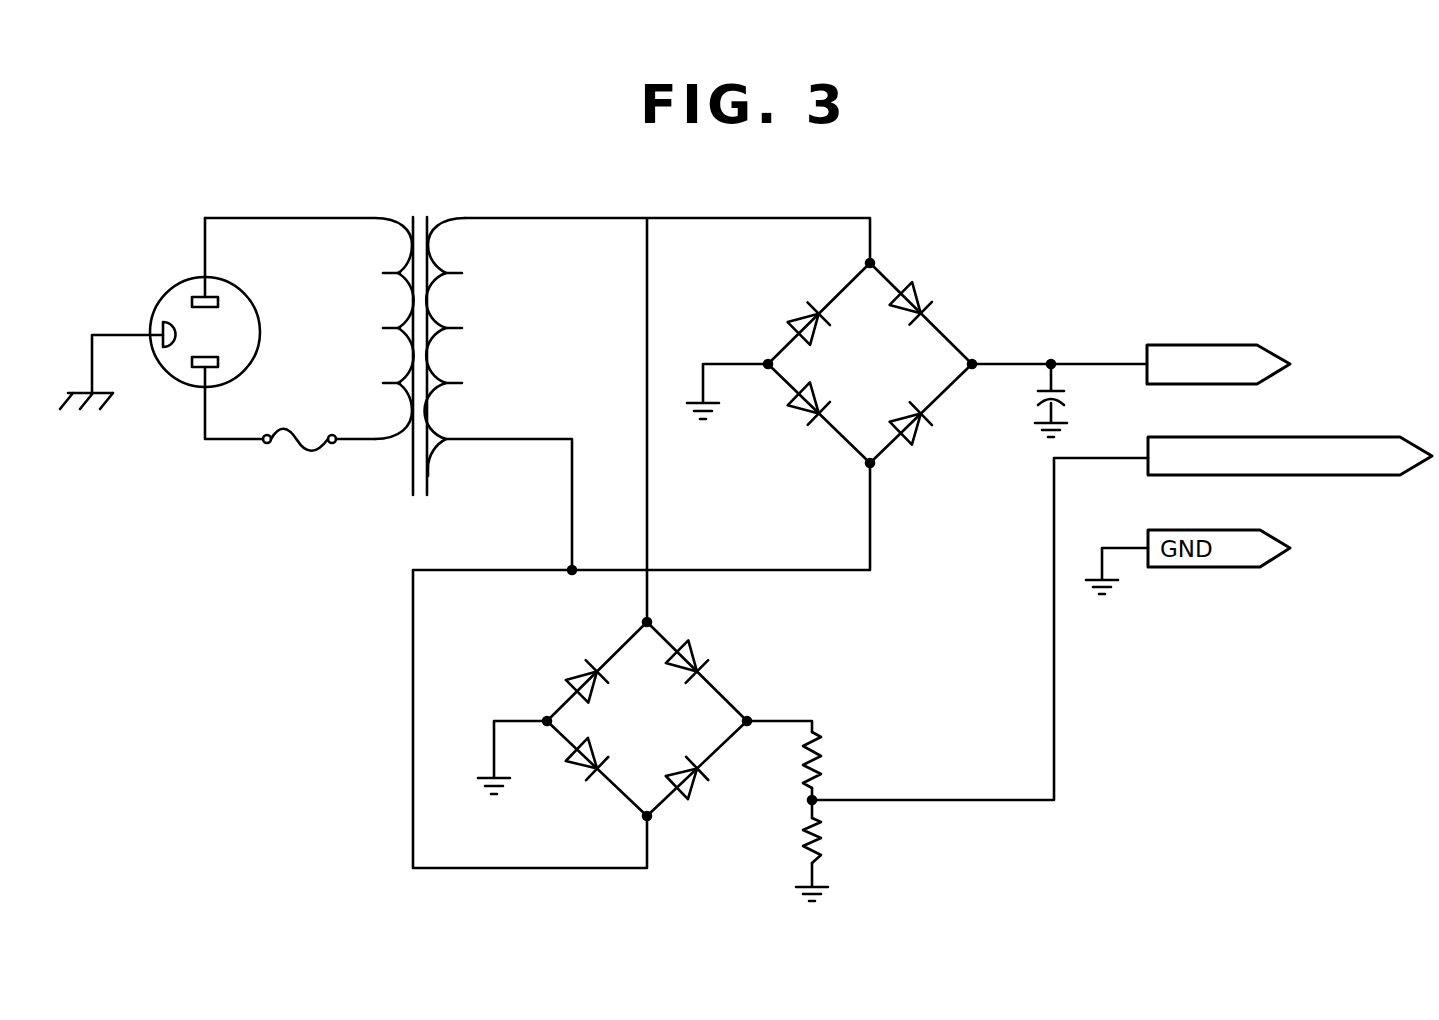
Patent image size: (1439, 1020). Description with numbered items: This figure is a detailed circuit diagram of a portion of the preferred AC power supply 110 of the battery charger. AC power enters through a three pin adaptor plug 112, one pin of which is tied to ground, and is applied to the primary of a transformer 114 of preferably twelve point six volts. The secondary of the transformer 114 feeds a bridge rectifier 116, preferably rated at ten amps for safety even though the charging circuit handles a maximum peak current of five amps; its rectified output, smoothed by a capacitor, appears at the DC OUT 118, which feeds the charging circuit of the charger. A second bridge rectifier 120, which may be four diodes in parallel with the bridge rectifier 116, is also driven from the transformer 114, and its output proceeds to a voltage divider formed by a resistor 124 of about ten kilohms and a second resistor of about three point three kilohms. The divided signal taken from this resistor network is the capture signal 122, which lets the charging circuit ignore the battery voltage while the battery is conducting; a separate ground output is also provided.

The AC power supply 110 is at (388, 343).
The three pin adaptor plug 112 is at (183, 290).
The transformer 114 is at (458, 248).
The bridge rectifier 116 is at (889, 268).
The DC OUT 118 is at (1168, 346).
The bridge rectifier 120 is at (668, 632).
The capture signal 122 is at (1196, 441).
The resistor 124 is at (816, 735).